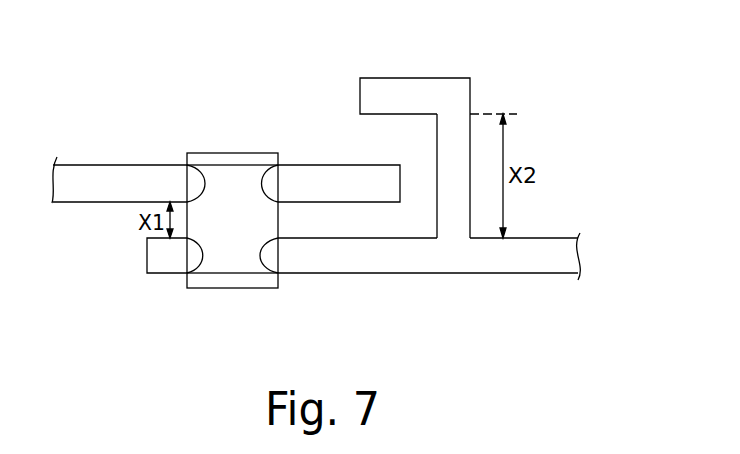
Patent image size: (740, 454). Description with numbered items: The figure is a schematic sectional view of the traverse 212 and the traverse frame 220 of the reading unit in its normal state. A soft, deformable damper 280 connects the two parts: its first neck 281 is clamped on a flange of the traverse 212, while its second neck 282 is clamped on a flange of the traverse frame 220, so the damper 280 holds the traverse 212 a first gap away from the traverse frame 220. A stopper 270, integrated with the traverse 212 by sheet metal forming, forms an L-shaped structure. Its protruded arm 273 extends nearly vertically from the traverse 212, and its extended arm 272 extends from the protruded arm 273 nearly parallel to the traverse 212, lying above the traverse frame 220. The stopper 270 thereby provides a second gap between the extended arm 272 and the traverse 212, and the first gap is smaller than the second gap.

The traverse 212 is at (557, 275).
The traverse frame 220 is at (118, 165).
The stopper 270 is at (437, 177).
The extended arm 272 is at (423, 90).
The protruded arm 273 is at (448, 194).
The damper 280 is at (242, 152).
The first neck 281 is at (203, 253).
The second neck 282 is at (262, 187).